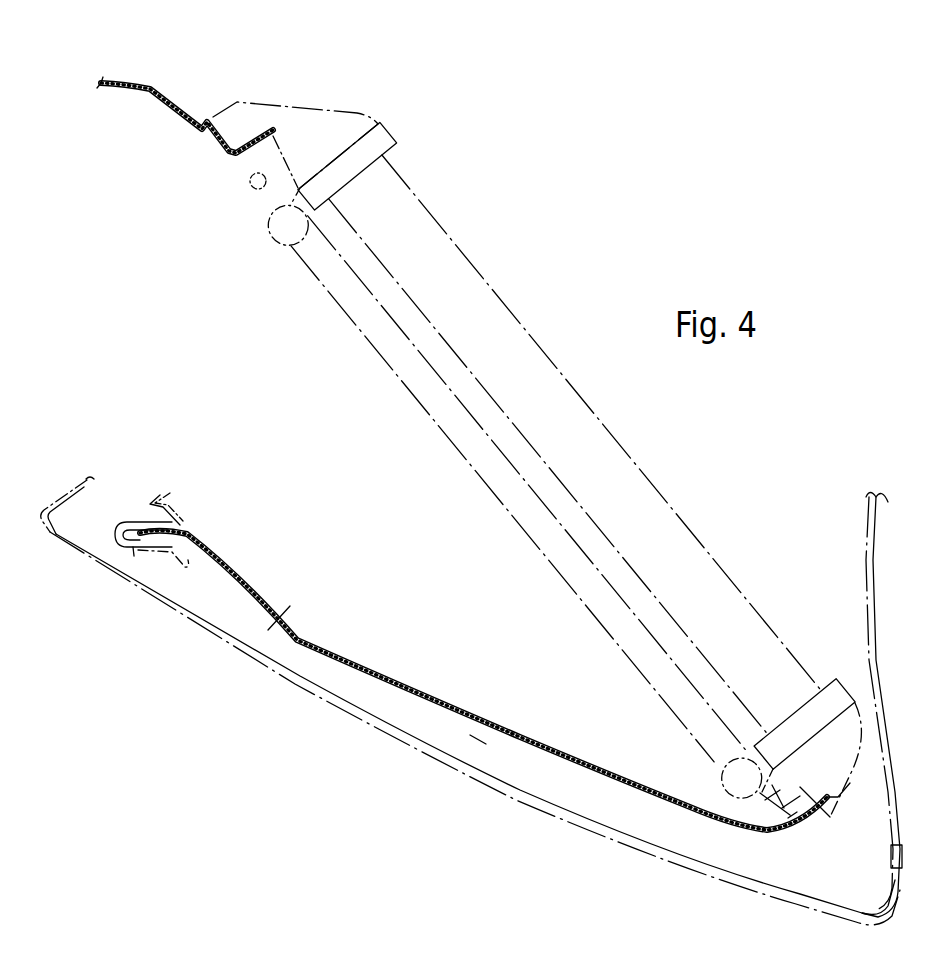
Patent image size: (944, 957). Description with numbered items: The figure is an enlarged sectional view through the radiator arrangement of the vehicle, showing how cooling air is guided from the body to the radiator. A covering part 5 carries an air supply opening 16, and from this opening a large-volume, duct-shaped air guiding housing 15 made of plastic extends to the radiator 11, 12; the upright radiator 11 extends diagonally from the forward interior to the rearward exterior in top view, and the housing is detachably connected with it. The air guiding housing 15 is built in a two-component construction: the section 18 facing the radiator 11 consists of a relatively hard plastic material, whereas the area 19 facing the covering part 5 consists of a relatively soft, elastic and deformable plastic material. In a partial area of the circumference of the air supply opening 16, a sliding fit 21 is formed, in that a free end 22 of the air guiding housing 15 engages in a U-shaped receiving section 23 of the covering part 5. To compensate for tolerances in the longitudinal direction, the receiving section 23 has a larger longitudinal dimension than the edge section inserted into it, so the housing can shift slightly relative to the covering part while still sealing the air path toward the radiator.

The covering part 5 is at (57, 535).
The radiator 11 is at (426, 204).
The radiator 12 is at (372, 340).
The air guiding housing 15 is at (479, 724).
The air supply opening 16 is at (150, 290).
The section 18 is at (130, 81).
The area 19 is at (230, 567).
The sliding fit 21 is at (189, 521).
The free end 22 is at (133, 548).
The receiving section 23 is at (137, 518).